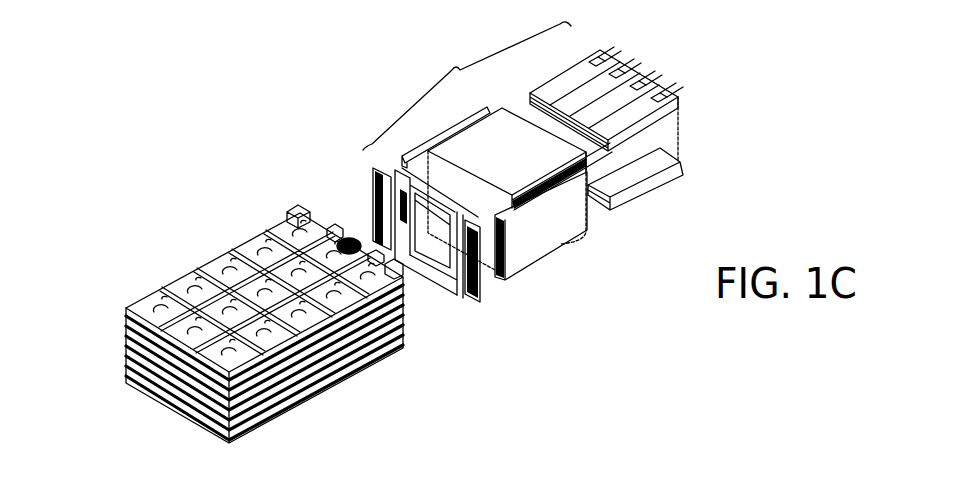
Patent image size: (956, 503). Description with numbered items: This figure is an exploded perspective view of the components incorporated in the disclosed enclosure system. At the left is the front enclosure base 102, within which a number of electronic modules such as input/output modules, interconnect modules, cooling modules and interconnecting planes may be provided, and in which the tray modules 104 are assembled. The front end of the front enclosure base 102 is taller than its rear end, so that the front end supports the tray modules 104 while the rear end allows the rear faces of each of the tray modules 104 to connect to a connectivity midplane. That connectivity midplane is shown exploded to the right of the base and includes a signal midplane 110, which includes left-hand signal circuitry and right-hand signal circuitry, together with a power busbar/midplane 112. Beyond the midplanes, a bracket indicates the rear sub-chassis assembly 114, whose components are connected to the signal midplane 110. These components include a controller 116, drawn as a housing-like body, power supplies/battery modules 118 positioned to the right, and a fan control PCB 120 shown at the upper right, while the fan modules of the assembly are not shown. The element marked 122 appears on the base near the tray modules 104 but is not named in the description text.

The front enclosure base 102 is at (313, 397).
The tray modules 104 is at (127, 367).
The signal midplane 110 is at (372, 184).
The power busbar/midplane 112 is at (338, 160).
The rear sub-chassis assembly 114 is at (467, 86).
The controller 116 is at (552, 255).
The power supplies/battery modules 118 is at (677, 163).
The fan control PCB 120 is at (688, 130).
The terminal 122 is at (290, 216).